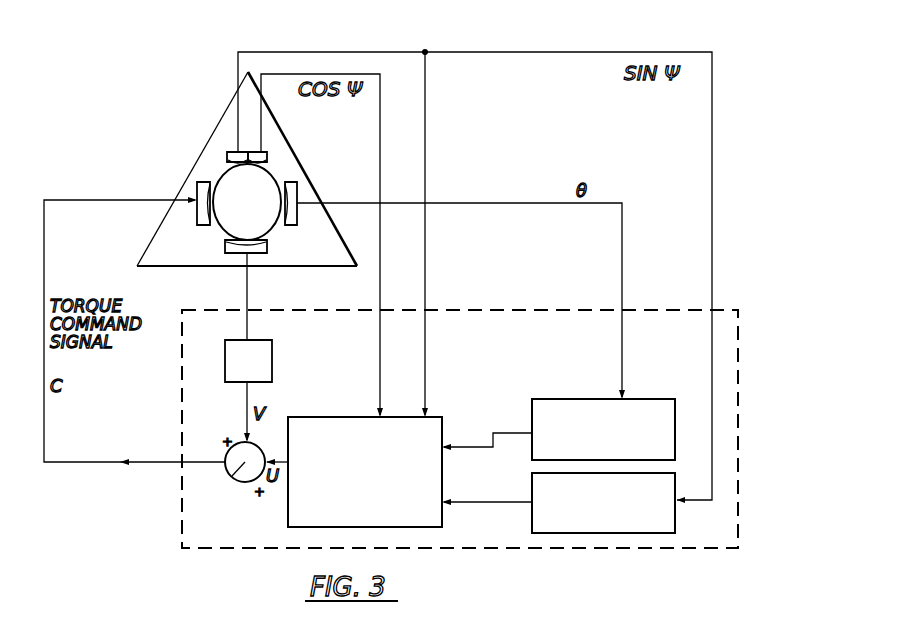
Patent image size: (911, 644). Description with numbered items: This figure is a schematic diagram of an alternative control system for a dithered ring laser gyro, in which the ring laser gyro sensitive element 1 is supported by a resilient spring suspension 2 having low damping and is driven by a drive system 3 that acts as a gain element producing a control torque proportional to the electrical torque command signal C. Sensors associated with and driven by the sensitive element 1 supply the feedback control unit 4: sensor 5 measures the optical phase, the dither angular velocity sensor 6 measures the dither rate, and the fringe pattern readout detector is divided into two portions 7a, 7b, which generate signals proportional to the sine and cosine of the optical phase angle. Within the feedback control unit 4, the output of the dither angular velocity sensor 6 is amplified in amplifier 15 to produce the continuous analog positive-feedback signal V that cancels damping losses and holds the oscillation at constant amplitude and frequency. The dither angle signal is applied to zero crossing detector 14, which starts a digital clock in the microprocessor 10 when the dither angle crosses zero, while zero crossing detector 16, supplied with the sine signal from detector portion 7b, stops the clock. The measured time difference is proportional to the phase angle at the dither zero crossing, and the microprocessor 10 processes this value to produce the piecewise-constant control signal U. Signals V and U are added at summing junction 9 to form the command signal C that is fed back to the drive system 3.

The ring laser gyro sensitive element 1 is at (315, 253).
The resilient spring suspension 2 is at (235, 188).
The drive system 3 is at (197, 220).
The feedback control unit 4 is at (491, 310).
The optical phase angle sensor 5 is at (298, 192).
The dither angular velocity sensor 6 is at (227, 249).
The readout detector portion 7a is at (230, 150).
The readout detector portion 7b is at (266, 152).
The summing junction 9 is at (232, 476).
The microprocessor 10 is at (345, 420).
The zero crossing detector 14 is at (649, 404).
The amplifier 15 is at (272, 362).
The zero crossing detector 16 is at (532, 490).